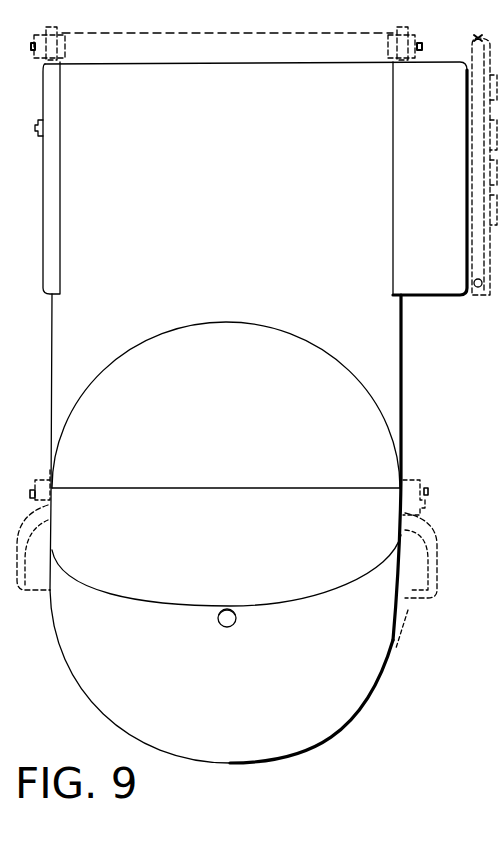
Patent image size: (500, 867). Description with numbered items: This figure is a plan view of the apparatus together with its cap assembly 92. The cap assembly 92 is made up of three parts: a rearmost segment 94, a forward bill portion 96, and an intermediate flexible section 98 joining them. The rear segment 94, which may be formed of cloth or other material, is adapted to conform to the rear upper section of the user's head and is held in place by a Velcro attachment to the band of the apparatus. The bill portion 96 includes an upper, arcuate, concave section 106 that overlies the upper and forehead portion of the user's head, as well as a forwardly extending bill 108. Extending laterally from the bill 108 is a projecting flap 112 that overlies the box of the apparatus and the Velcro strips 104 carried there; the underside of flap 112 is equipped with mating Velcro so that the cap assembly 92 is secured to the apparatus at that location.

The cap assembly 92 is at (420, 609).
The rearmost segment 94 is at (374, 643).
The forward bill portion 96 is at (404, 430).
The intermediate flexible section 98 is at (403, 527).
The Velcro strips 104 is at (7, 145).
The upper arcuate concave section 106 is at (268, 432).
The forwardly extending bill 108 is at (268, 200).
The laterally projecting flap 112 is at (427, 253).